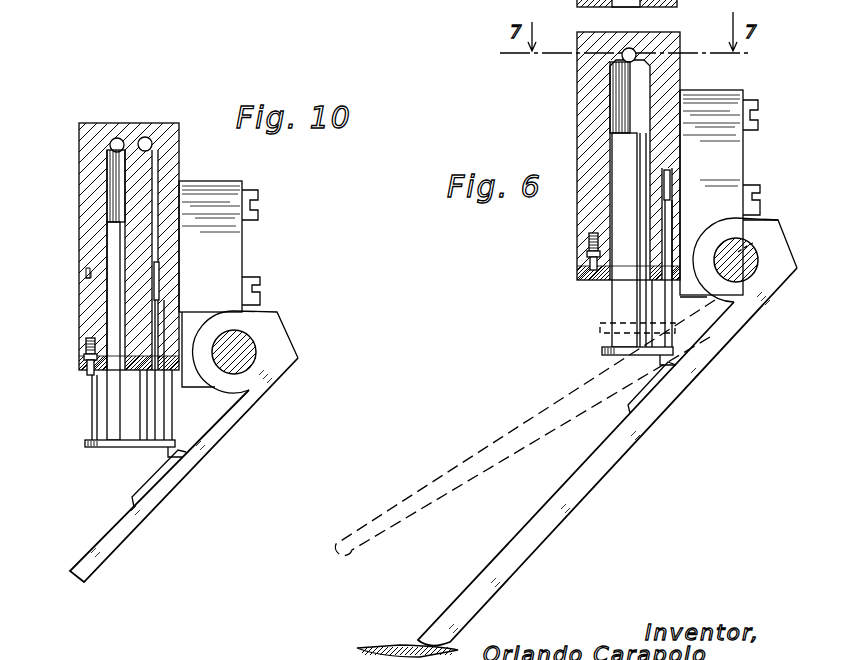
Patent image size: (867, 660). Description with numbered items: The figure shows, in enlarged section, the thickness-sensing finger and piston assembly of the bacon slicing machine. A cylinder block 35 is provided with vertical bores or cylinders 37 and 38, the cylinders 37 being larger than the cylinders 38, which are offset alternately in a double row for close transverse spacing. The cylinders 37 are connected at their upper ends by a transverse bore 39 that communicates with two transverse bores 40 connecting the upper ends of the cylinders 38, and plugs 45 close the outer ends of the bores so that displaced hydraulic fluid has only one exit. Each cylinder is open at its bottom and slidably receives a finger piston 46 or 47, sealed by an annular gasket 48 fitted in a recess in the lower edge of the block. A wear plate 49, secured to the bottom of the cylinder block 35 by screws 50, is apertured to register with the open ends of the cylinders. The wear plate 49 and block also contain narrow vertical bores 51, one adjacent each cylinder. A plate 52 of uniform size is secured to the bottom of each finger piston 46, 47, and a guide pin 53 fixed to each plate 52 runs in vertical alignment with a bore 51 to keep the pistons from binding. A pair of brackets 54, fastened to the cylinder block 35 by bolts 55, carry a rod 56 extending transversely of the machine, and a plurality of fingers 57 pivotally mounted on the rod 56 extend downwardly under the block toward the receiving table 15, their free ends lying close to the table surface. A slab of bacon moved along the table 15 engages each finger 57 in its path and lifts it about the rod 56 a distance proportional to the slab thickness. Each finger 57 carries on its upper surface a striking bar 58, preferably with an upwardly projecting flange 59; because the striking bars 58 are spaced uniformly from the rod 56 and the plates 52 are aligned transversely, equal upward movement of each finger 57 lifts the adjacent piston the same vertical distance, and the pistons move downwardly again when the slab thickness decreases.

In FIG. 6, the receiving table 15 is at (383, 647).
In FIG. 10, the cylinder block 35 is at (88, 190).
In FIG. 6, the cylinder block 35 is at (584, 233).
In FIG. 6, the cylinder 37 is at (617, 78).
In FIG. 10, the cylinder 38 is at (108, 168).
In FIG. 6, the transverse bore 39 is at (631, 48).
In FIG. 10, the transverse bore 40 is at (117, 138).
In FIG. 6, the plug 45 is at (642, 6).
In FIG. 6, the finger piston 46 is at (623, 293).
In FIG. 10, the finger piston 47 is at (145, 418).
In FIG. 10, the annular gasket 48 is at (86, 348).
In FIG. 6, the annular gasket 48 is at (603, 270).
In FIG. 10, the wear plate 49 is at (83, 364).
In FIG. 6, the wear plate 49 is at (590, 268).
In FIG. 10, the screw 50 is at (91, 378).
In FIG. 6, the screw 50 is at (589, 256).
In FIG. 10, the narrow vertical bore 51 is at (87, 277).
In FIG. 6, the narrow vertical bore 51 is at (671, 185).
In FIG. 10, the plate 52 is at (90, 446).
In FIG. 6, the plate 52 is at (602, 352).
In FIG. 10, the guide pin 53 is at (91, 432).
In FIG. 6, the guide pin 53 is at (668, 250).
In FIG. 10, the bracket 54 is at (242, 237).
In FIG. 6, the bracket 54 is at (745, 140).
In FIG. 10, the bolt 55 is at (258, 280).
In FIG. 6, the bolt 55 is at (760, 190).
In FIG. 10, the rod 56 is at (255, 343).
In FIG. 6, the rod 56 is at (757, 243).
In FIG. 10, the finger 57 is at (216, 440).
In FIG. 6, the finger 57 is at (612, 446).
In FIG. 10, the striking bar 58 is at (150, 483).
In FIG. 6, the striking bar 58 is at (660, 395).
In FIG. 10, the upwardly projecting flange 59 is at (186, 466).
In FIG. 6, the upwardly projecting flange 59 is at (677, 366).